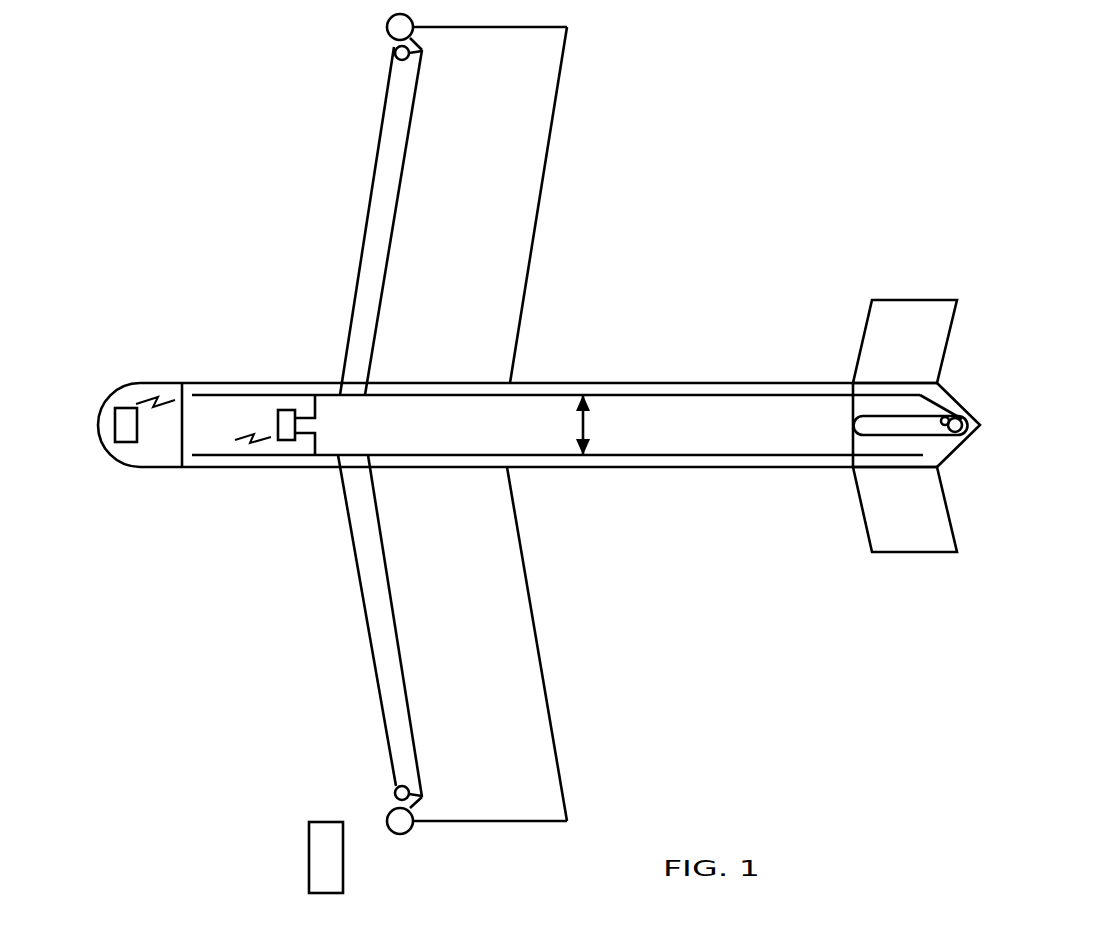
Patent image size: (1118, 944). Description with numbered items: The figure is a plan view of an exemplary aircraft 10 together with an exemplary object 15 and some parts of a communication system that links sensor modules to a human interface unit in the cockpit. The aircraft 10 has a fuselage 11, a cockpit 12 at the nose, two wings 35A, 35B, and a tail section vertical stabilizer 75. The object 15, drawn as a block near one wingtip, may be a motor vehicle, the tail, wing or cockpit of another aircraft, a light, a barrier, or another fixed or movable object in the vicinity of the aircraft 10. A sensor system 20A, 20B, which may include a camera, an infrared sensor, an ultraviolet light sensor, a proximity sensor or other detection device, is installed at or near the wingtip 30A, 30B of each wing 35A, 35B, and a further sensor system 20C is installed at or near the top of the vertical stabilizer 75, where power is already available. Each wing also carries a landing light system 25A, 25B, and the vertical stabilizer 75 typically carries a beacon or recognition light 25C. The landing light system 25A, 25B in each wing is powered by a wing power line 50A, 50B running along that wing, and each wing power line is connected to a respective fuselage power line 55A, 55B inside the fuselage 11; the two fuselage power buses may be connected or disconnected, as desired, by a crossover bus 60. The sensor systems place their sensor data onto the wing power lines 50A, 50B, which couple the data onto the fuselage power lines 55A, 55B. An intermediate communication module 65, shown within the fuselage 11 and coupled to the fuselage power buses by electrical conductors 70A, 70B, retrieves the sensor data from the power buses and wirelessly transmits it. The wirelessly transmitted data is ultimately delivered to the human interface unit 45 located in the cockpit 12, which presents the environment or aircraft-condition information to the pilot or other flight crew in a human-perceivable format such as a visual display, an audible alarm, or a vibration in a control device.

The aircraft 10 is at (271, 362).
The fuselage 11 is at (773, 438).
The cockpit 12 is at (169, 457).
The object 15 is at (306, 849).
The sensor system 20A is at (387, 32).
The sensor system 20B is at (388, 813).
The sensor system 20C is at (961, 420).
The landing light system 25A is at (395, 62).
The landing light system 25B is at (395, 785).
The beacon or recognition light 25C is at (948, 427).
The wingtip 30A is at (490, 28).
The wingtip 30B is at (499, 820).
The wing 35A is at (495, 170).
The wing 35B is at (507, 623).
The human interface unit 45 is at (113, 424).
The wing power line 50A is at (389, 262).
The wing power line 50B is at (388, 580).
The fuselage power line 55A is at (453, 397).
The fuselage power line 55B is at (453, 453).
The crossover bus 60 is at (589, 425).
The intermediate communication module 65 is at (276, 425).
The electrical conductor 70A is at (317, 407).
The electrical conductor 70B is at (317, 445).
The tail section vertical stabilizer 75 is at (890, 416).